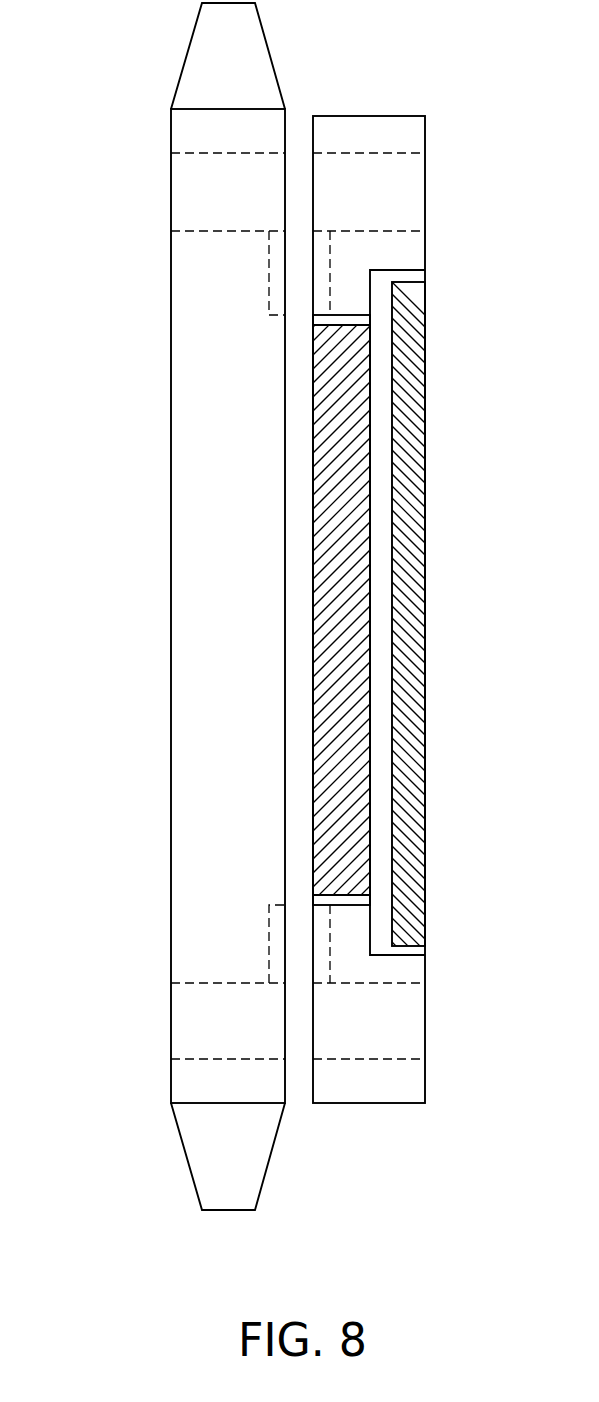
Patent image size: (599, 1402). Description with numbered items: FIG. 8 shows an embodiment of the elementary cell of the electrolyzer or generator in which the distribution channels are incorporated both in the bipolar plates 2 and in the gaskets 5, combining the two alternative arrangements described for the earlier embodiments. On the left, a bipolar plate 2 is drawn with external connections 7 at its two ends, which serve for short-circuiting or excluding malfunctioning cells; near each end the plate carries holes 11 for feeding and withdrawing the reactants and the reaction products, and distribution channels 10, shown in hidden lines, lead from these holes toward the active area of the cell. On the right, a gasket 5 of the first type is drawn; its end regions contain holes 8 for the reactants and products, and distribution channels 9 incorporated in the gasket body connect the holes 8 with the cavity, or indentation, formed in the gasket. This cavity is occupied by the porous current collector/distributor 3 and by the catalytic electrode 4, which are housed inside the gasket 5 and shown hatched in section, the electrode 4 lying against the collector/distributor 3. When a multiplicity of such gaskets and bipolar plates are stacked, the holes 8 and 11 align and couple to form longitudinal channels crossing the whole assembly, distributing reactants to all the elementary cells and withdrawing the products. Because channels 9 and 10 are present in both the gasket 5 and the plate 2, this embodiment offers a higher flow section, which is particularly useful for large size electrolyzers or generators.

The bipolar plate 2 is at (200, 560).
The current collector/distributor 3 is at (330, 560).
The catalytic electrode 4 is at (418, 600).
The gasket 5 is at (370, 137).
The external connection 7 is at (191, 77).
The hole 8 is at (415, 187).
The distribution channel 9 is at (320, 252).
The distribution channel 10 is at (272, 272).
The hole 11 is at (190, 191).